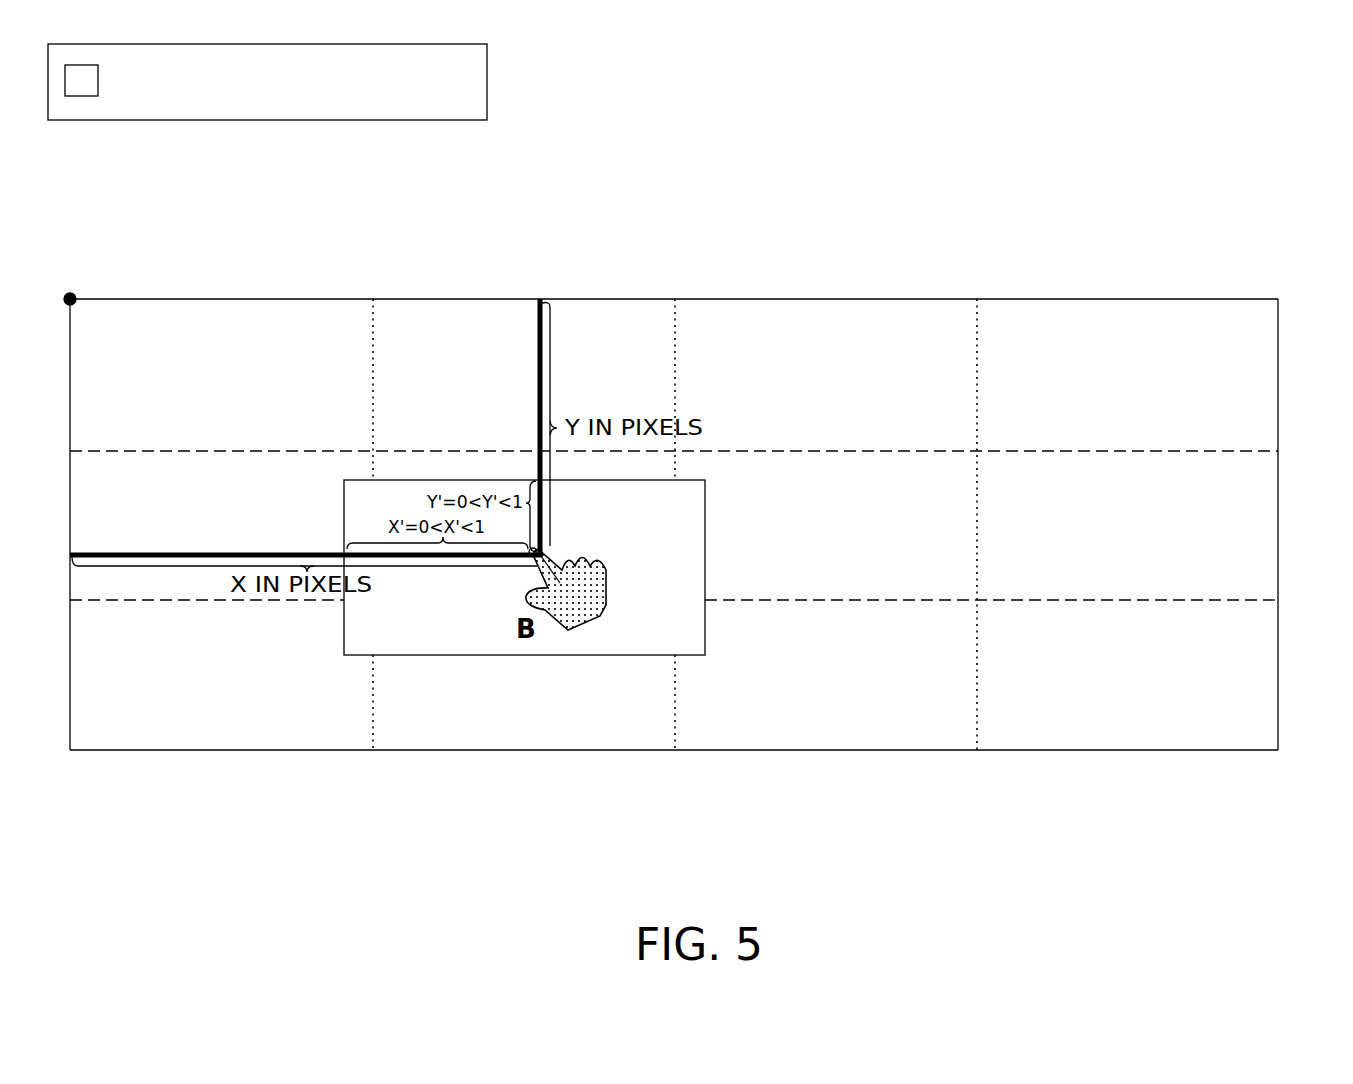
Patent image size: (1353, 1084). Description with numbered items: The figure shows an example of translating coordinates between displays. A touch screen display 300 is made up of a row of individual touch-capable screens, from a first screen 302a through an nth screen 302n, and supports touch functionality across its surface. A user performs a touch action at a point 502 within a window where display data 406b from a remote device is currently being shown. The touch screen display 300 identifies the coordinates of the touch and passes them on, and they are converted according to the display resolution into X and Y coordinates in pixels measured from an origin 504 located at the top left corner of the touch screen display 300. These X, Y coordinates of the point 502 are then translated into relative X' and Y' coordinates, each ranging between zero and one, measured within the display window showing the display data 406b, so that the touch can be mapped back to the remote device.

The display data 406b is at (267, 82).
The touch screen display 300 is at (1213, 118).
The screen 302a is at (222, 323).
The screen 302n is at (1045, 728).
The origin 504 is at (71, 298).
The point 502 is at (552, 548).